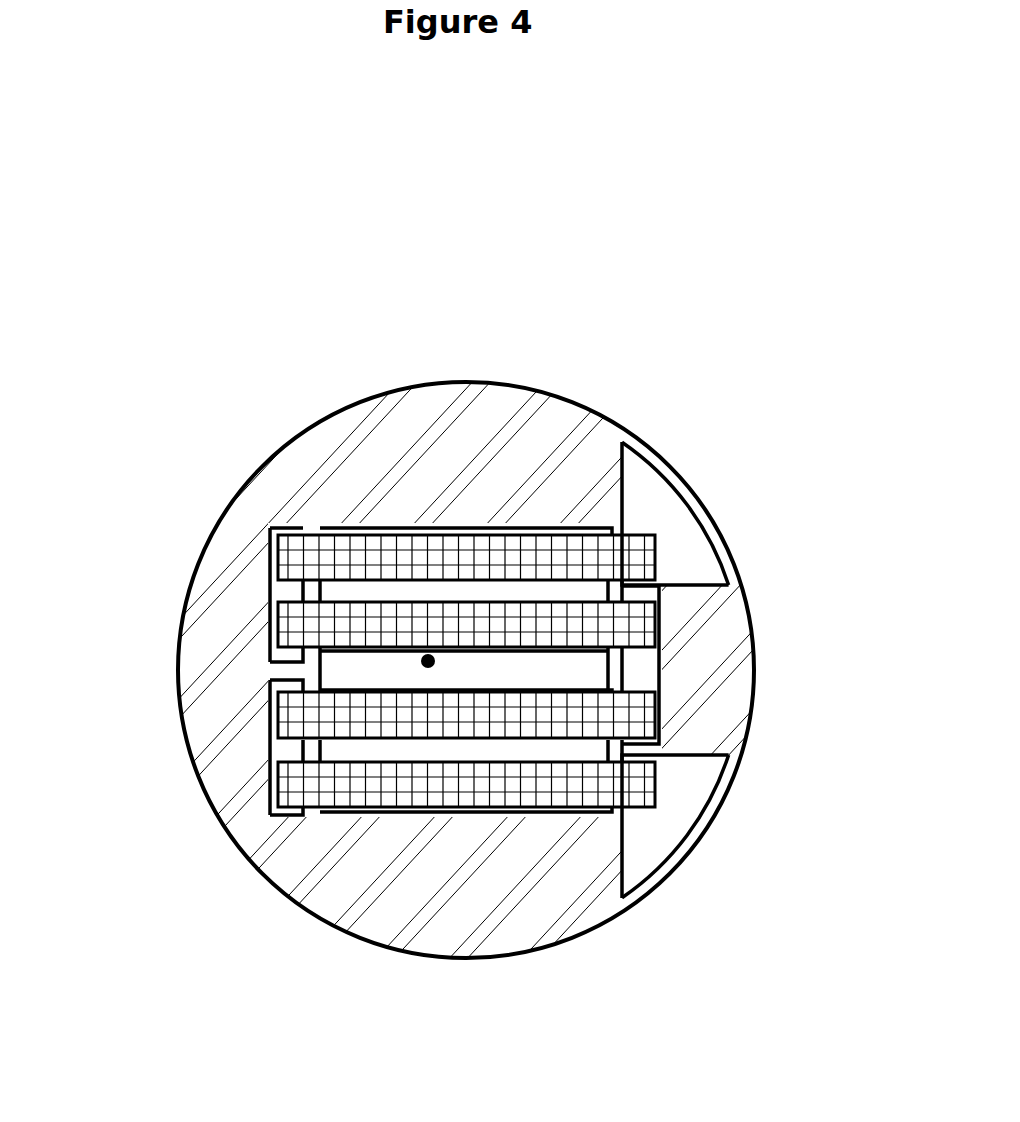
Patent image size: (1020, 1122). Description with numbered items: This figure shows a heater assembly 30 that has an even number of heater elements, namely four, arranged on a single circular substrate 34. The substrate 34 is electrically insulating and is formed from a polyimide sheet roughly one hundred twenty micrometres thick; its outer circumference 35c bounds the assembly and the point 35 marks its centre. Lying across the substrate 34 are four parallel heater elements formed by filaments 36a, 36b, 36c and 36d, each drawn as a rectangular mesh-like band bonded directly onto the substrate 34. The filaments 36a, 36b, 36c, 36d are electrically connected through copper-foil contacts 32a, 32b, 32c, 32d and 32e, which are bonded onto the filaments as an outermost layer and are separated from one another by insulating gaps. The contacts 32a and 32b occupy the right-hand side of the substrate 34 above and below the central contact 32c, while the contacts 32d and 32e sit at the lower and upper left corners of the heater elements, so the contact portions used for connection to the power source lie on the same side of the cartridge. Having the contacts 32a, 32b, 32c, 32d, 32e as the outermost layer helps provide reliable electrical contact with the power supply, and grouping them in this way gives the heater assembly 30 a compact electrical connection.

The heater assembly 30 is at (538, 250).
The contact 32a is at (668, 497).
The contact 32b is at (663, 856).
The contact 32c is at (640, 675).
The contact 32d is at (278, 822).
The contact 32e is at (268, 531).
The substrate 34 is at (556, 430).
The rotor center axis 35 is at (428, 660).
The outer circumferential surface of rotor 35c is at (486, 372).
The filaments 36a is at (288, 549).
The filaments 36b is at (288, 623).
The filaments 36c is at (288, 711).
The filaments 36d is at (288, 785).